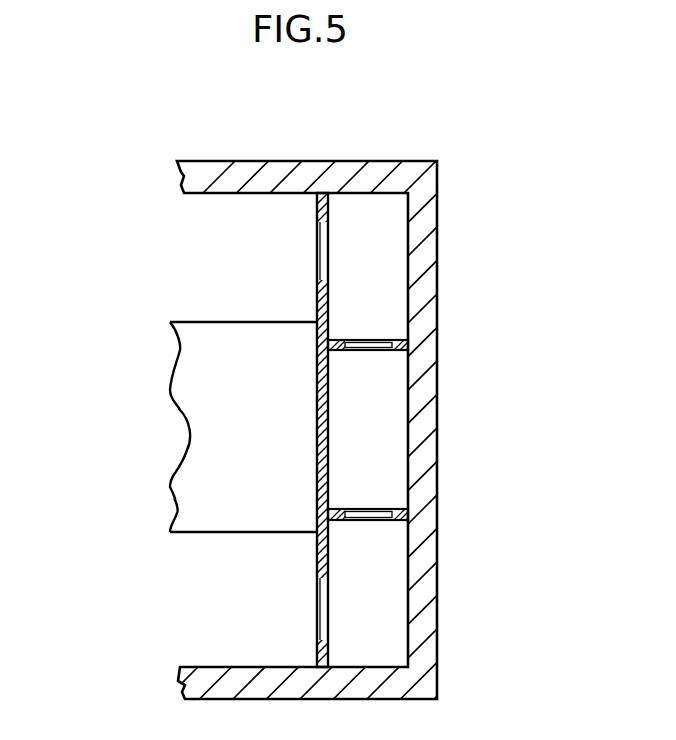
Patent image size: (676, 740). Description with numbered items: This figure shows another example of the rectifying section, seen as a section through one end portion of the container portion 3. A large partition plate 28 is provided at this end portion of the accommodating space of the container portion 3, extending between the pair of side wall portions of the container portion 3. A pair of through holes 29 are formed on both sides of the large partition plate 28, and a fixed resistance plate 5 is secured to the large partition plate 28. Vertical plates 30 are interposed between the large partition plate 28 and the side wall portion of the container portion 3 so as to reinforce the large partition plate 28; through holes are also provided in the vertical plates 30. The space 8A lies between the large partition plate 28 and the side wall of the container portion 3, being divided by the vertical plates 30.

The container portion 3 is at (280, 161).
The fixed resistance plate 5 is at (188, 362).
The chamber 8A is at (385, 303).
The large partition plate 28 is at (317, 296).
The through hole 29 is at (326, 240).
The vertical plate 30 is at (387, 352).